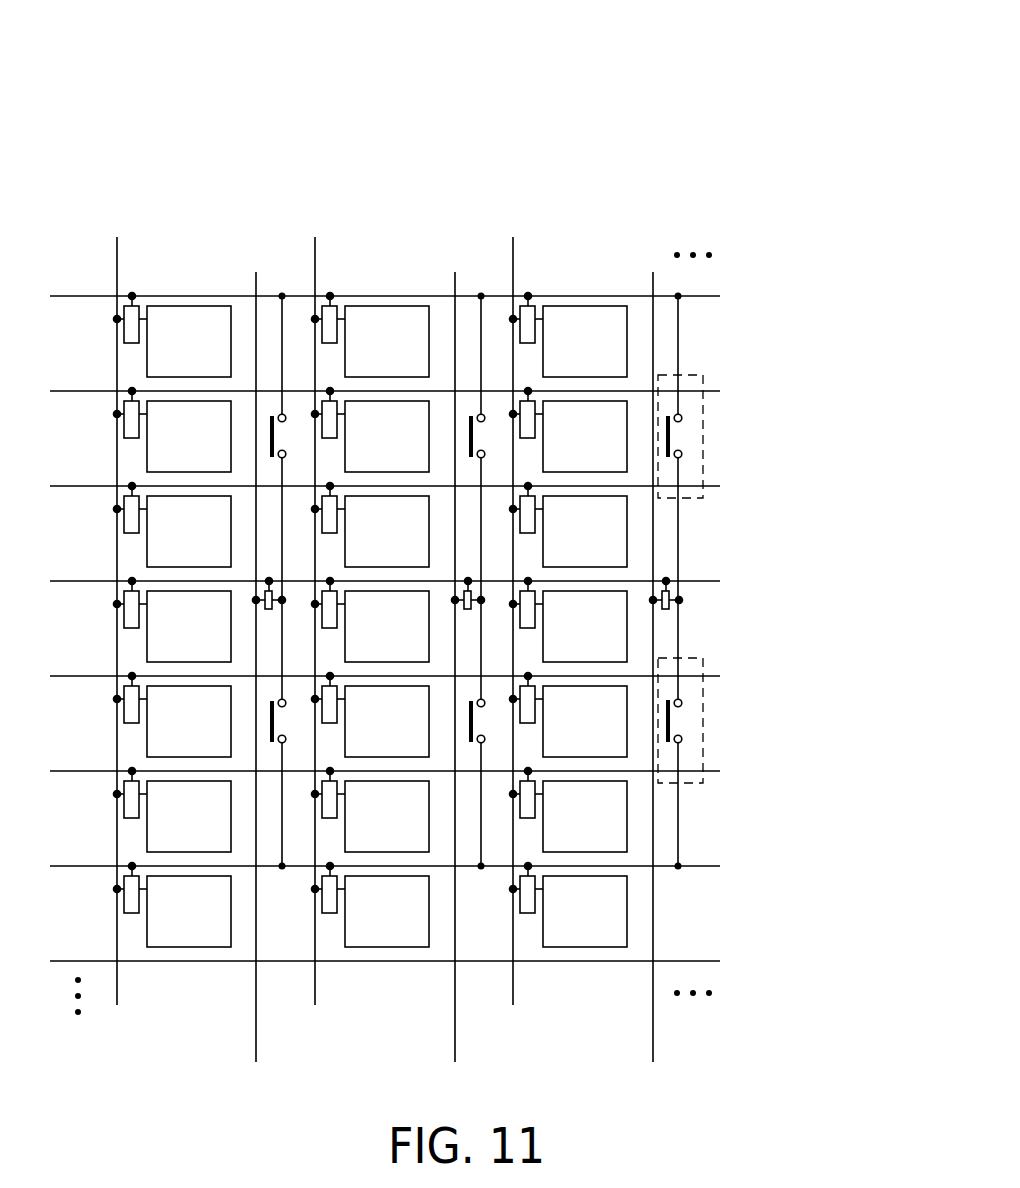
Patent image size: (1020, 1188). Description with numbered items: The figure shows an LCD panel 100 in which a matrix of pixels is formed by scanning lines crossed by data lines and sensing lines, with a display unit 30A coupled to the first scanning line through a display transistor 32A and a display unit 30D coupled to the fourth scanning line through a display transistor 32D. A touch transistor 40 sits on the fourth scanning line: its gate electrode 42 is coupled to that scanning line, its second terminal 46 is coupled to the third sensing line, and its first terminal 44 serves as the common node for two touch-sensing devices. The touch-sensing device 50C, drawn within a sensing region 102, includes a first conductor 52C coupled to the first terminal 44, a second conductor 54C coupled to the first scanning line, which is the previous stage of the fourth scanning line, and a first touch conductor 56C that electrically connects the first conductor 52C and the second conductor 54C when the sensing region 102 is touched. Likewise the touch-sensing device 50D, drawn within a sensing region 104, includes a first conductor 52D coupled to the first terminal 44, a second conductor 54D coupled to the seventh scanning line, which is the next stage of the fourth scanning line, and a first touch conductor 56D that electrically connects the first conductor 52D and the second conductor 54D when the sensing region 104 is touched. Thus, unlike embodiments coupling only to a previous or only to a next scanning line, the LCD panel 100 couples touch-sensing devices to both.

The LCD panel 100 is at (196, 100).
The display unit 30A is at (600, 322).
The display transistor 32A is at (542, 300).
The display unit 30D is at (607, 605).
The display transistor 32D is at (532, 597).
The sensing region 102 is at (688, 382).
The sensing region 104 is at (695, 777).
The touch-sensing device 50C is at (815, 385).
The first conductor 52C is at (690, 460).
The second conductor 54C is at (690, 414).
The first touch conductor 56C is at (675, 438).
The touch-sensing device 50D is at (815, 672).
The first conductor 52D is at (690, 700).
The second conductor 54D is at (690, 744).
The first touch conductor 56D is at (675, 722).
The touch transistor 40 is at (785, 548).
The gate electrode 42 is at (680, 571).
The first terminal 44 is at (688, 600).
The second terminal 46 is at (659, 611).